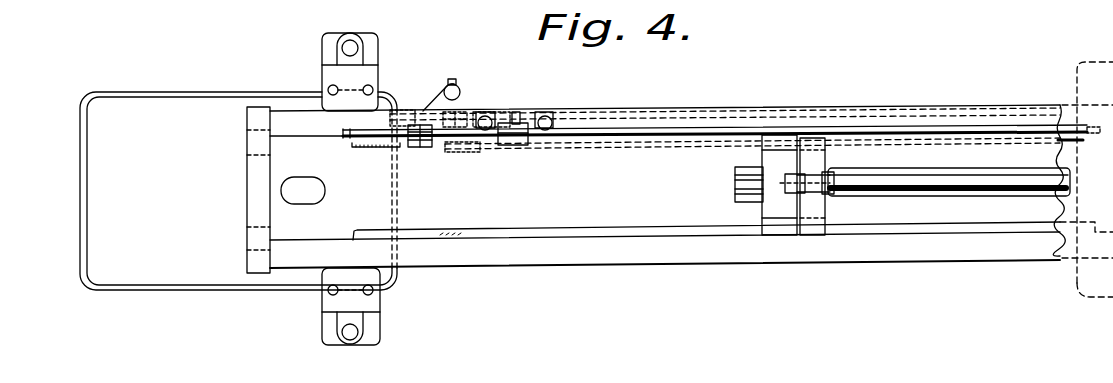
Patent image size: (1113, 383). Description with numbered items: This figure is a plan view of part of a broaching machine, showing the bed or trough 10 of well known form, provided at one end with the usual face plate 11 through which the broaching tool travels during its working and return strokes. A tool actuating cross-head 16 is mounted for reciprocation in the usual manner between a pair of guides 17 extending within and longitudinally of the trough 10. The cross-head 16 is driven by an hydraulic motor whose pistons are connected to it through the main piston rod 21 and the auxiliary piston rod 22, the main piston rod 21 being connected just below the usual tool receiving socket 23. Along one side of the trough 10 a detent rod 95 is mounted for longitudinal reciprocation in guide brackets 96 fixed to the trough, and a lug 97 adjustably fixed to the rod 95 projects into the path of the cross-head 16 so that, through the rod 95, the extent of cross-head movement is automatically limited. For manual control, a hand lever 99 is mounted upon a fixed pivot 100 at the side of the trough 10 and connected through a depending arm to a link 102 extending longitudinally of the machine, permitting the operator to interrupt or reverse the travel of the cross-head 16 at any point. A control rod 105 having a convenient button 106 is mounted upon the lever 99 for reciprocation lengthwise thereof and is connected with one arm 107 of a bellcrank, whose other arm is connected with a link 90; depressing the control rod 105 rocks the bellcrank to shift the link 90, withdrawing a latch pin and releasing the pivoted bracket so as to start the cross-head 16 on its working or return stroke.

The bed or trough 10 is at (613, 212).
The face plate 11 is at (255, 175).
The tool actuating cross-head 16 is at (777, 215).
The guides 17 is at (508, 230).
The main piston rod 21 is at (998, 195).
The auxiliary piston rod 22 is at (978, 178).
The tool receiving socket 23 is at (745, 182).
The link 90 is at (1062, 108).
The detent rod 95 is at (742, 130).
The guide brackets 96 is at (538, 111).
The lug 97 is at (426, 147).
The hand lever 99 is at (464, 104).
The fixed pivot 100 is at (483, 110).
The link 102 is at (614, 148).
The control rod 105 is at (452, 78).
The button 106 is at (463, 88).
The arm of bellcrank 107 is at (435, 95).